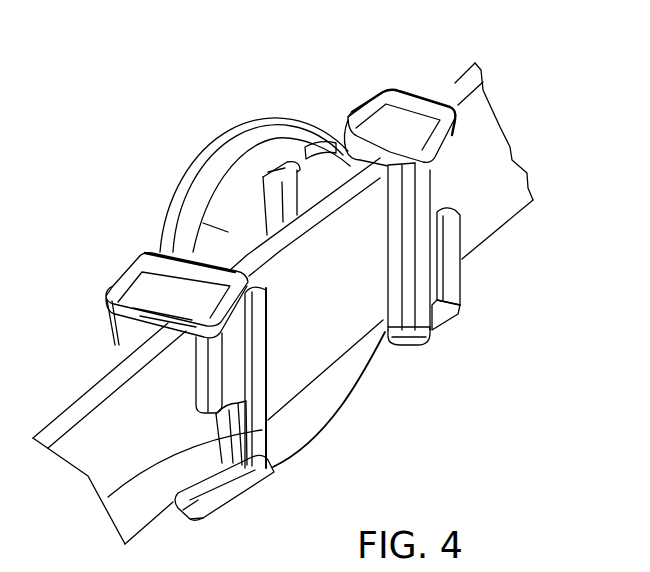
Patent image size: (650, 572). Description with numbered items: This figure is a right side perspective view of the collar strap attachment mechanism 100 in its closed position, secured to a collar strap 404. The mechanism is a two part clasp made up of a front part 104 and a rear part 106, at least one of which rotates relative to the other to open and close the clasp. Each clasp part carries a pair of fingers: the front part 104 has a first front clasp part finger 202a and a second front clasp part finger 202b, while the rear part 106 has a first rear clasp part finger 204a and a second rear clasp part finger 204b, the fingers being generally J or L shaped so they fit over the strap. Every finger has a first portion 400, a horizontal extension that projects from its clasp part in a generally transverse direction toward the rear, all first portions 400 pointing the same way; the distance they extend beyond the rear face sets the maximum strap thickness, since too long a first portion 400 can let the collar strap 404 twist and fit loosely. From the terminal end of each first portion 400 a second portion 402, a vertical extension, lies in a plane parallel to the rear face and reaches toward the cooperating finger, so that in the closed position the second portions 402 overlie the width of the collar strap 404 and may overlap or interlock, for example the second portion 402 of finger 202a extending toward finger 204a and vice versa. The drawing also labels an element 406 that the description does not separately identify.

The collar strap attachment mechanism 100 is at (148, 156).
The front part 104 is at (237, 140).
The rear part 106 is at (277, 140).
The first front clasp part finger 202a is at (107, 286).
The front clasp part finger 202b is at (460, 316).
The first rear clasp part finger 204a is at (250, 490).
The rear clasp part finger 204b is at (368, 103).
The first portion 400 is at (157, 280).
The second portion 402 is at (392, 210).
The collar strap 404 is at (103, 427).
The panel lower portion 406 is at (110, 496).